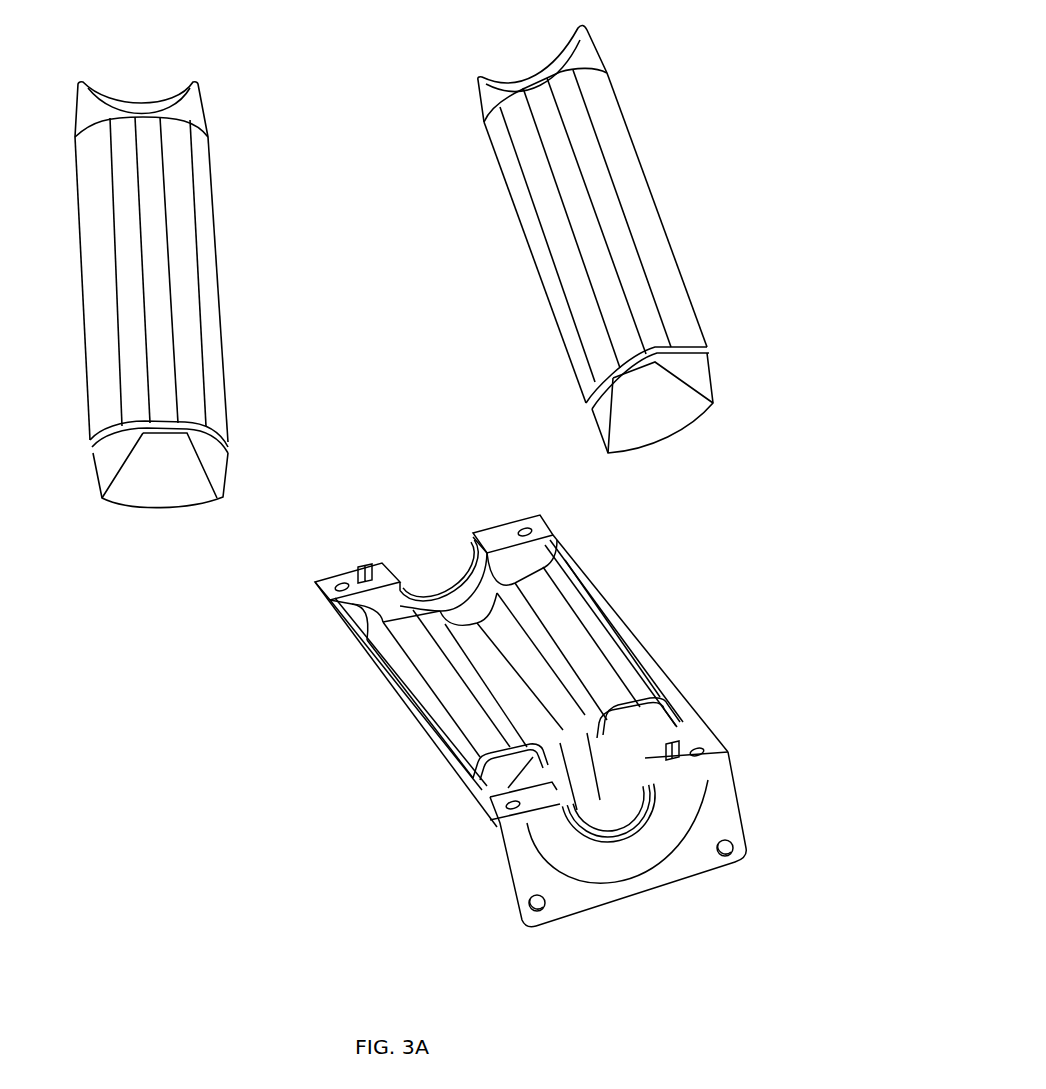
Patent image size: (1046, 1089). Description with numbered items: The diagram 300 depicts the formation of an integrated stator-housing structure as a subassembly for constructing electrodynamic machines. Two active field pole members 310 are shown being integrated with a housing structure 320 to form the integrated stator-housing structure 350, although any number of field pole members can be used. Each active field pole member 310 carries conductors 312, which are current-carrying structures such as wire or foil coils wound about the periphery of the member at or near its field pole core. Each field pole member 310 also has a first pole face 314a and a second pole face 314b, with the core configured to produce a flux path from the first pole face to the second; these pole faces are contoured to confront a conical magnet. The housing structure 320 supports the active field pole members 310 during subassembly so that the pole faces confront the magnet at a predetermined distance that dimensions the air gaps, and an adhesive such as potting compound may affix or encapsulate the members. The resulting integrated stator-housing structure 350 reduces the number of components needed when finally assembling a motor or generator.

The diagram 300 is at (855, 162).
The active field pole member 310 is at (276, 402).
The conductor 312 is at (218, 270).
The first pole face 314a is at (140, 100).
The second pole face 314b is at (417, 668).
The housing structure 320 is at (627, 625).
The integrated stator-housing structure 350 is at (484, 480).